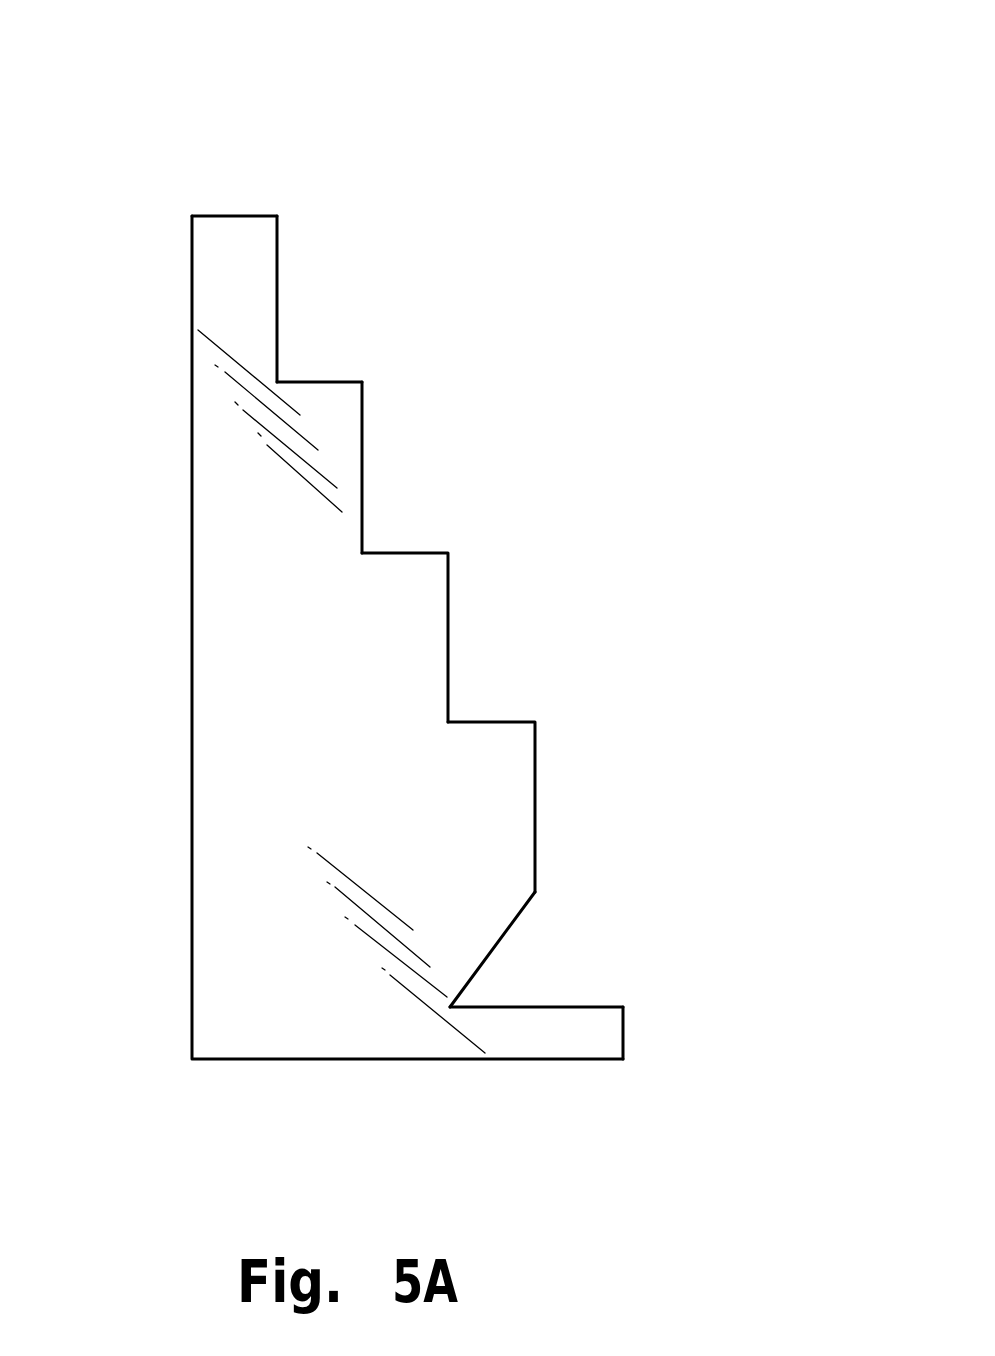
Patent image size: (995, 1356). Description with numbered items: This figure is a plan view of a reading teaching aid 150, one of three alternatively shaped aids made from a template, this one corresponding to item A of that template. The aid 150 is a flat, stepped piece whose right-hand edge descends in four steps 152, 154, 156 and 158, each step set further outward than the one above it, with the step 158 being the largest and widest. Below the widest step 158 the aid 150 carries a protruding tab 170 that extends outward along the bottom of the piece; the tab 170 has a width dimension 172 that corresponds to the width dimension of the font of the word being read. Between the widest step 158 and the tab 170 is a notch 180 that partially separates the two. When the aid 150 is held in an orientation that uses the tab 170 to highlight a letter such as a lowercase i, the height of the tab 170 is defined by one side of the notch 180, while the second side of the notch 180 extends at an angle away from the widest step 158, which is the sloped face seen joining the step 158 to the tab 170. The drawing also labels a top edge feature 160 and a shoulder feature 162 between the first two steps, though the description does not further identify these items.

The aid 150 is at (107, 102).
The top surface 160 is at (235, 215).
The step 152 is at (262, 295).
The step shoulder 162 is at (278, 342).
The step 154 is at (345, 442).
The step 156 is at (425, 620).
The step 158 is at (522, 803).
The notch 180 is at (513, 953).
The protruding tab 170 is at (577, 1048).
The width dimension 172 is at (624, 1031).